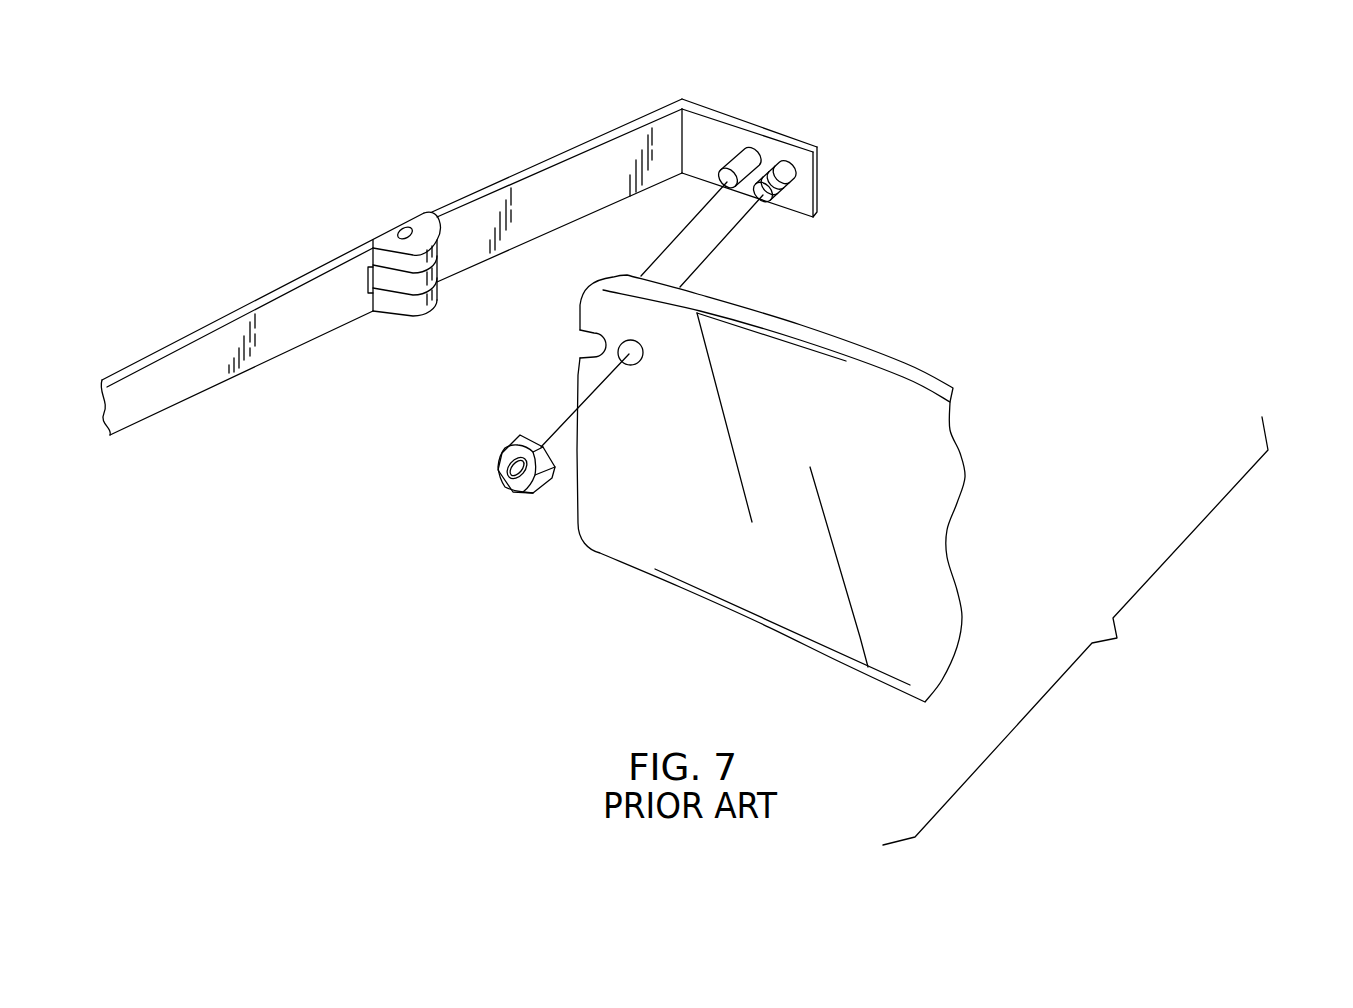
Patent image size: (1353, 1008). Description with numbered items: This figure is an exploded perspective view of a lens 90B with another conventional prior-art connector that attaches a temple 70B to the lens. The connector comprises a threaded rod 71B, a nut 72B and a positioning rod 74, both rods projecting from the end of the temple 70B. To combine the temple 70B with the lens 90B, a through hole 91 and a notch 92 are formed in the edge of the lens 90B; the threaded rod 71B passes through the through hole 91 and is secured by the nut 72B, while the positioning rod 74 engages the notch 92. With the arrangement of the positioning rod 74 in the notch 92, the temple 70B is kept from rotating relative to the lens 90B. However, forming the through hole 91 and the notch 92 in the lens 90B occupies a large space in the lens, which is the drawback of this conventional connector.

The temple 70B is at (524, 172).
The positioning rod 74 is at (748, 157).
The threaded rod 71B is at (787, 185).
The lens 90B is at (868, 356).
The notch 92 is at (592, 334).
The through hole 91 is at (631, 354).
The nut 72B is at (527, 489).